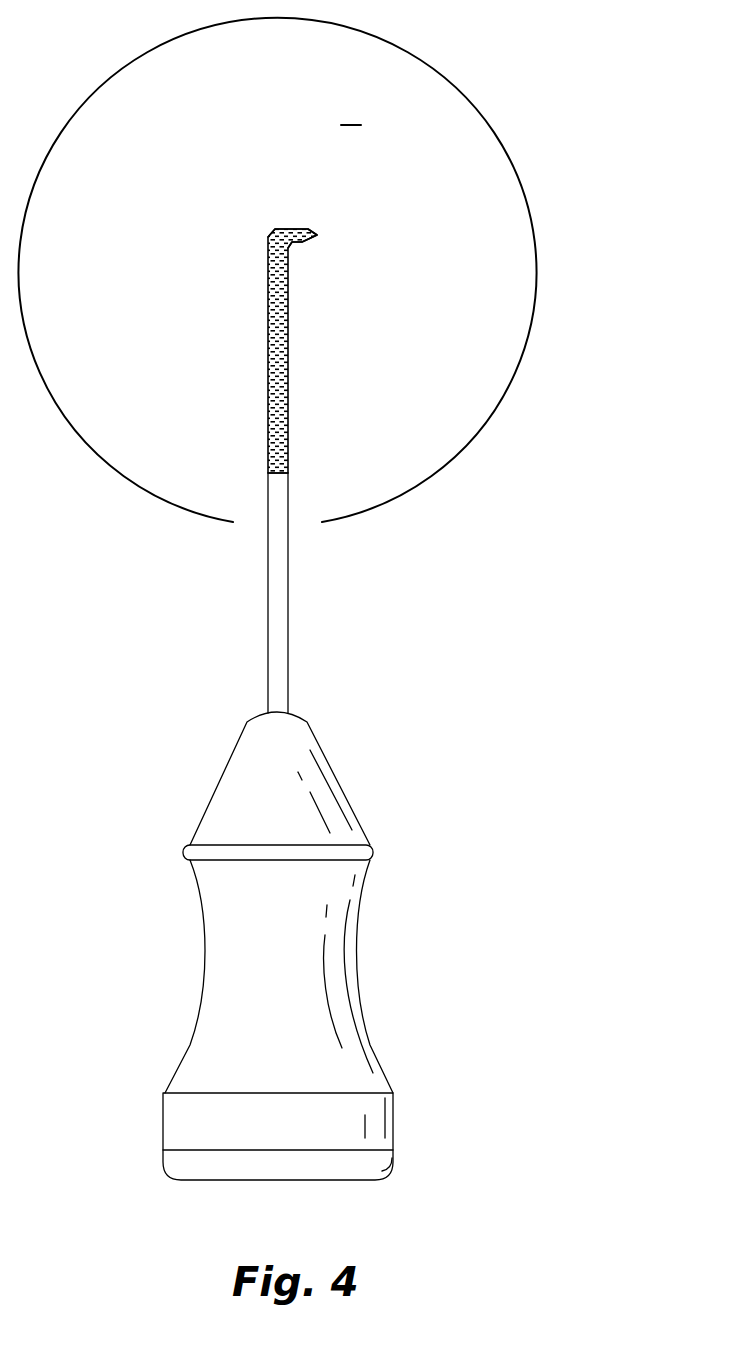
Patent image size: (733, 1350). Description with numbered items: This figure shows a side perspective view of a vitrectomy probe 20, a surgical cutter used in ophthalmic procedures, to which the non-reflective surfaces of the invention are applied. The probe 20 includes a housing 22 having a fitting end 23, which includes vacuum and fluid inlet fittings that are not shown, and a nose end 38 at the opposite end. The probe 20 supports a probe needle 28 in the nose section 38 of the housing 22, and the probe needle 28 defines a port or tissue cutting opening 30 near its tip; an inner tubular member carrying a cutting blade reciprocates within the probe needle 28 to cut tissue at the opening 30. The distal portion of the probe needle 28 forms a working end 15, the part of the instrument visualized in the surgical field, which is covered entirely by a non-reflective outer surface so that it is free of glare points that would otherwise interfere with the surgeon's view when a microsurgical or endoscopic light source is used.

The working end 15 is at (258, 233).
The probe 20 is at (566, 386).
The housing 22 is at (380, 929).
The fitting end 23 is at (394, 1173).
The probe needle 28 is at (289, 580).
The tissue cutting opening 30 is at (294, 252).
The nose end 38 is at (238, 746).